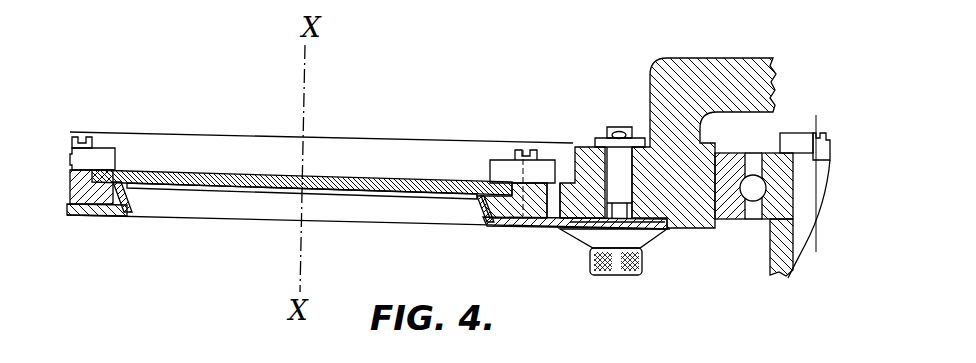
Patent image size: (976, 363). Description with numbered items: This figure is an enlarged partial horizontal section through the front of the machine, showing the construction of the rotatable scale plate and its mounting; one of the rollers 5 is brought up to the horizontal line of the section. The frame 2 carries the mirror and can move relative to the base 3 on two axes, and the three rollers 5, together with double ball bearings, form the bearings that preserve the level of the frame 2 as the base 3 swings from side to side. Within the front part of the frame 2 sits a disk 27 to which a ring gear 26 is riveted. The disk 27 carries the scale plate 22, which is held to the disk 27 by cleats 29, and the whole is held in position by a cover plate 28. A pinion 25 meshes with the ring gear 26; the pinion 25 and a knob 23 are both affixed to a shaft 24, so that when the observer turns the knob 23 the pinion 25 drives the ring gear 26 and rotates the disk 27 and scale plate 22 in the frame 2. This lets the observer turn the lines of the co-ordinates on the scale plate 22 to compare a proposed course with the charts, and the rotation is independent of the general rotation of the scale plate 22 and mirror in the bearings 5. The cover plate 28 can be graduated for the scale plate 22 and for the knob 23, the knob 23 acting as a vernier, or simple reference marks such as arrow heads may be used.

The frame 2 is at (714, 57).
The base 3 is at (764, 281).
The rollers 5 is at (732, 223).
The scale plate 22 is at (402, 171).
The knob 23 is at (638, 278).
The shaft 24 is at (619, 127).
The pinion 25 is at (637, 205).
The ring gear 26 is at (521, 211).
The disk 27 is at (563, 146).
The cover plate 28 is at (487, 231).
The cleats 29 is at (102, 146).